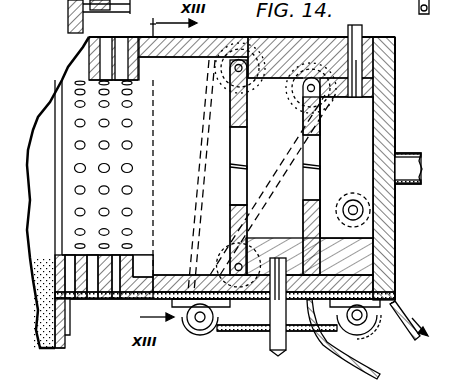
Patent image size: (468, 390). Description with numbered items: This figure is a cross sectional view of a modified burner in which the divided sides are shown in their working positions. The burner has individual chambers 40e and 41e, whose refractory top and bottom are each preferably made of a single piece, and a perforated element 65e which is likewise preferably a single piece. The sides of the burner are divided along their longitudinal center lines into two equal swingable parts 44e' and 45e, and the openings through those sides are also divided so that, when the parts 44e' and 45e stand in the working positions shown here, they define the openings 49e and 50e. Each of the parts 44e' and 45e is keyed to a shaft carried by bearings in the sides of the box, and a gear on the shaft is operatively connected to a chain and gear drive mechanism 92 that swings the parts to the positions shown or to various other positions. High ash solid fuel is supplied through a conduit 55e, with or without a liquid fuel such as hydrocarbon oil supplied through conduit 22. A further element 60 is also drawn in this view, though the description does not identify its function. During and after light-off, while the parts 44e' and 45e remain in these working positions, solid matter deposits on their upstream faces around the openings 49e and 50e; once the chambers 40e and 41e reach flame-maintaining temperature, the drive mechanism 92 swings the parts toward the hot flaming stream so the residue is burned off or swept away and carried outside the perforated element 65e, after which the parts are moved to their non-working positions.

The chamber 41e is at (273, 92).
The conduit 55e is at (351, 25).
The rod 60 is at (428, 17).
The side part 45e is at (246, 121).
The side part 44e' is at (328, 145).
The chamber 40e is at (396, 124).
The opening 50e is at (251, 164).
The opening 49e is at (325, 162).
The conduit 22 is at (407, 187).
The perforated element 65e is at (117, 300).
The chain and gear drive mechanism 92 is at (325, 343).